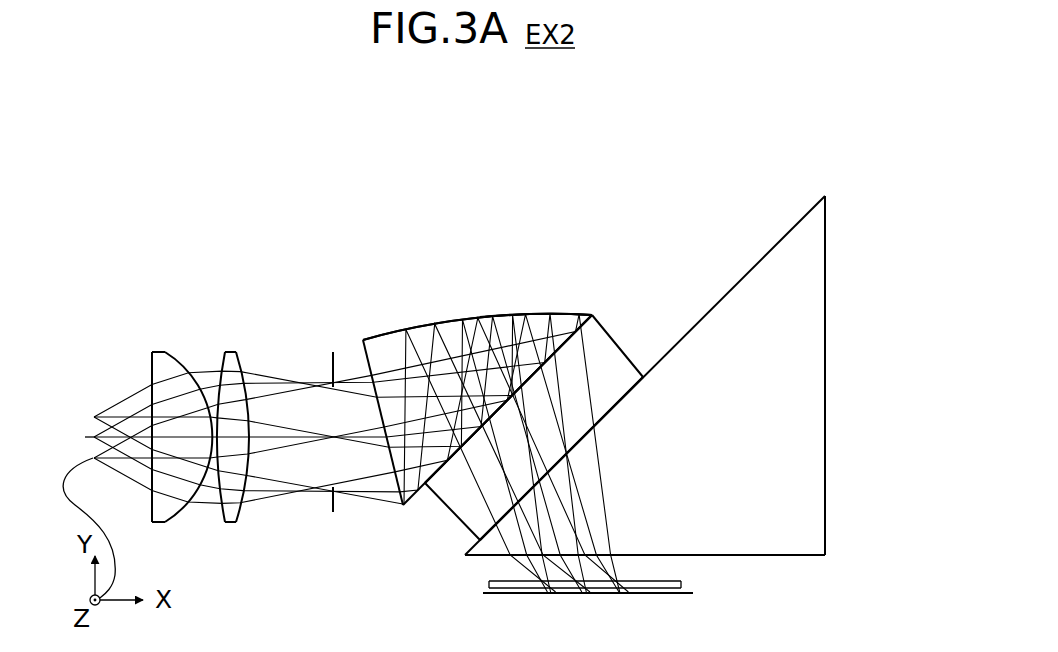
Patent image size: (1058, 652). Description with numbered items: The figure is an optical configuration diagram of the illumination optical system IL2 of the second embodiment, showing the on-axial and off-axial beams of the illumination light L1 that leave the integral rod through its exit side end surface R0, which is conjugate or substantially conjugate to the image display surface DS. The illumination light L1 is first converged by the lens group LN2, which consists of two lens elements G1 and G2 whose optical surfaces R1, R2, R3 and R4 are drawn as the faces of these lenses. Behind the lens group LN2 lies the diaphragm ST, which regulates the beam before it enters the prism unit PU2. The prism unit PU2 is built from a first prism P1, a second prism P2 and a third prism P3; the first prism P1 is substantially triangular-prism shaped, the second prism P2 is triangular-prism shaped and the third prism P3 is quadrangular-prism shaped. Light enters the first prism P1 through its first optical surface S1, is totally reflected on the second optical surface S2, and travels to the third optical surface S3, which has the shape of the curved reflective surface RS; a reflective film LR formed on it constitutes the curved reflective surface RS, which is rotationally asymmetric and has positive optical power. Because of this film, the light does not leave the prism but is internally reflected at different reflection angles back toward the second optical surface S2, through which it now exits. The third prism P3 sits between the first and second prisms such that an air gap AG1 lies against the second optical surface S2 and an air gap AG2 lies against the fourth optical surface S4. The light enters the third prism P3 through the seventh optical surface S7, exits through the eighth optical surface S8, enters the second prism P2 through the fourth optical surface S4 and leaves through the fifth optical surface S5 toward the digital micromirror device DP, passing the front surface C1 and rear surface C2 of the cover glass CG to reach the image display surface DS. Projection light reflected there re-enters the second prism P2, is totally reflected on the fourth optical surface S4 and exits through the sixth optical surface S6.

The illumination optical system IL2 is at (832, 129).
The lens group LN2 is at (255, 182).
The prism unit PU2 is at (832, 182).
The exit side end surface R0 is at (93, 398).
The illumination light L1 is at (129, 386).
The lens element G1 is at (158, 522).
The lens element G2 is at (230, 522).
The optical surface R1 is at (151, 362).
The optical surface R2 is at (174, 362).
The optical surface R3 is at (222, 362).
The optical surface R4 is at (239, 362).
The diaphragm ST is at (333, 422).
The first prism P1 is at (363, 352).
The first optical surface S1 is at (401, 506).
The second optical surface S2 is at (412, 500).
The third optical surface S3 is at (457, 320).
The curved reflective surface RS is at (477, 286).
The reflective film LR is at (538, 308).
The third prism P3 is at (466, 536).
The seventh optical surface S7 is at (426, 503).
The eighth optical surface S8 is at (645, 378).
The air gap AG1 is at (590, 338).
The air gap AG2 is at (614, 424).
The second prism P2 is at (815, 302).
The fourth optical surface S4 is at (703, 317).
The fifth optical surface S5 is at (814, 557).
The sixth optical surface S6 is at (825, 500).
The cover glass CG is at (484, 592).
The front surface of cover glass C1 is at (681, 581).
The rear surface of cover glass C2 is at (676, 589).
The image display surface DS is at (658, 593).
The digital micromirror device DP is at (612, 631).